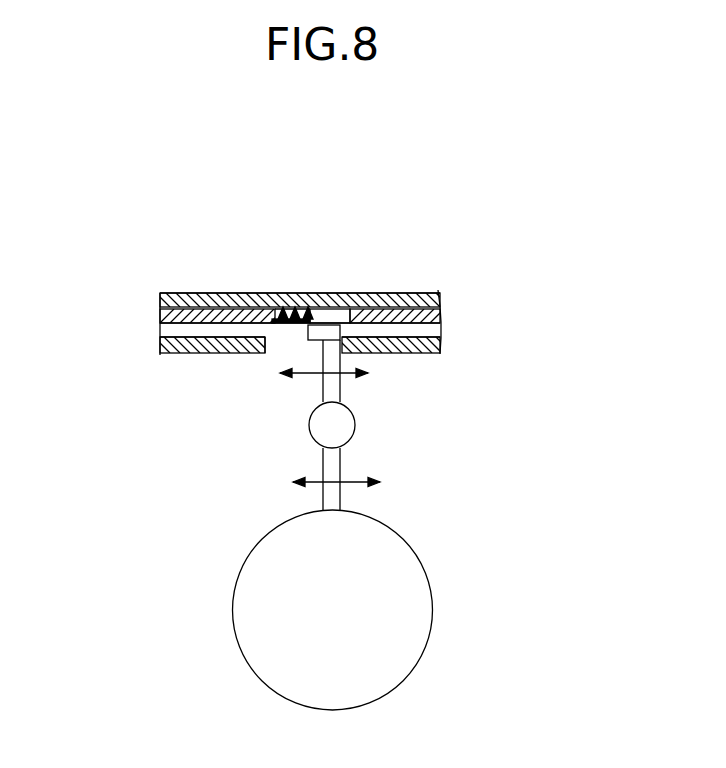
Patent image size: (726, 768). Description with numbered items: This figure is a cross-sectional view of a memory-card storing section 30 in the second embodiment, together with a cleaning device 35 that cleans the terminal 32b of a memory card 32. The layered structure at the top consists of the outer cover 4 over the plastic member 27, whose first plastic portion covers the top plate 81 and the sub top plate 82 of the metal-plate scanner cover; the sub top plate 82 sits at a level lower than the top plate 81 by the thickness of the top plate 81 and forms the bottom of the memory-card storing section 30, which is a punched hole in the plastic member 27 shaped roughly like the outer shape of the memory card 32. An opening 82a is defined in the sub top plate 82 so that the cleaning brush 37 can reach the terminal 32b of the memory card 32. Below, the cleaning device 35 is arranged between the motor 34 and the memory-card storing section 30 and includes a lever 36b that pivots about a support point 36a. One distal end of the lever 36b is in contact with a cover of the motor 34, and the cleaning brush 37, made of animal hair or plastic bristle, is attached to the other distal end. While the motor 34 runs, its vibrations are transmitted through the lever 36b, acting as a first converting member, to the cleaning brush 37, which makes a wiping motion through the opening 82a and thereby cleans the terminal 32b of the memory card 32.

The outer cover 4 is at (262, 293).
The plastic member 27 is at (162, 313).
The memory-card storing section 30 is at (237, 303).
The memory card 32 is at (335, 305).
The terminal 32b is at (308, 307).
The motor 34 is at (346, 626).
The cleaning device 35 is at (386, 485).
The support point 36a is at (312, 434).
The lever 36b is at (322, 498).
The cleaning brush 37 is at (343, 345).
The top plate 81 is at (163, 334).
The sub top plate 82 is at (192, 352).
The opening 82a is at (278, 343).